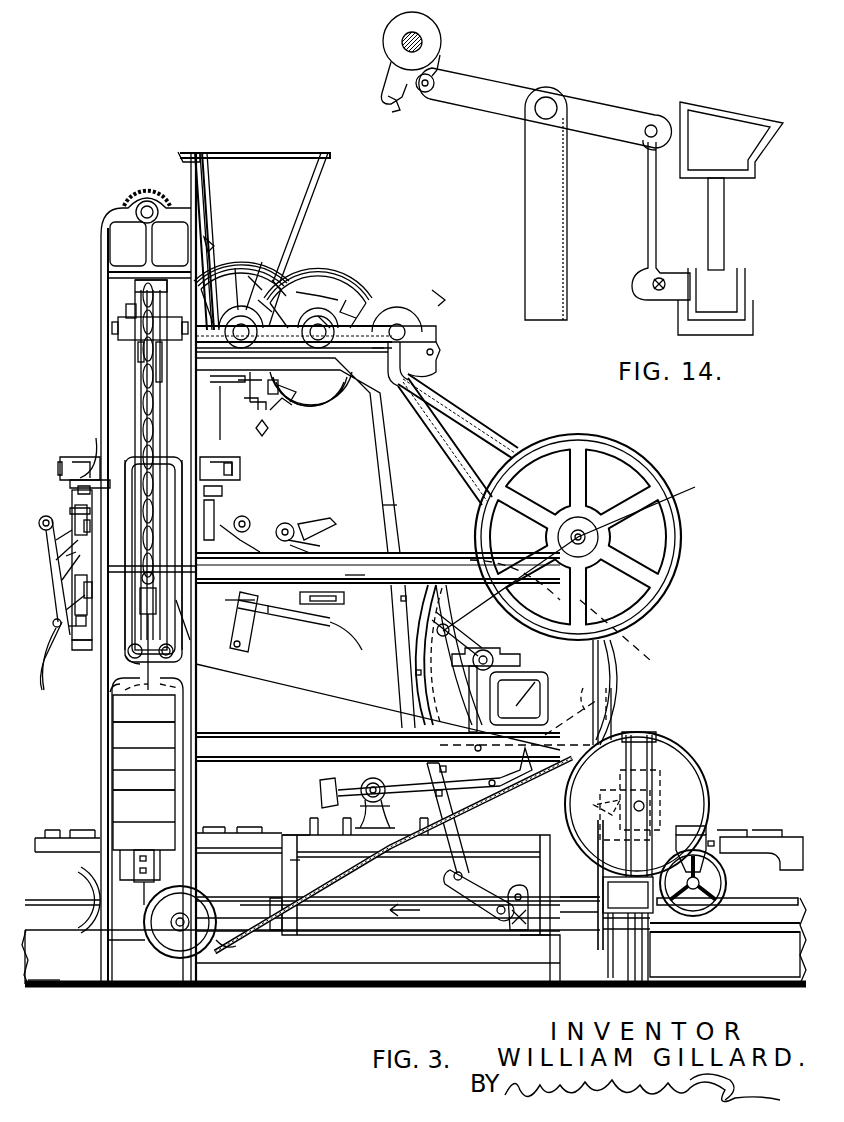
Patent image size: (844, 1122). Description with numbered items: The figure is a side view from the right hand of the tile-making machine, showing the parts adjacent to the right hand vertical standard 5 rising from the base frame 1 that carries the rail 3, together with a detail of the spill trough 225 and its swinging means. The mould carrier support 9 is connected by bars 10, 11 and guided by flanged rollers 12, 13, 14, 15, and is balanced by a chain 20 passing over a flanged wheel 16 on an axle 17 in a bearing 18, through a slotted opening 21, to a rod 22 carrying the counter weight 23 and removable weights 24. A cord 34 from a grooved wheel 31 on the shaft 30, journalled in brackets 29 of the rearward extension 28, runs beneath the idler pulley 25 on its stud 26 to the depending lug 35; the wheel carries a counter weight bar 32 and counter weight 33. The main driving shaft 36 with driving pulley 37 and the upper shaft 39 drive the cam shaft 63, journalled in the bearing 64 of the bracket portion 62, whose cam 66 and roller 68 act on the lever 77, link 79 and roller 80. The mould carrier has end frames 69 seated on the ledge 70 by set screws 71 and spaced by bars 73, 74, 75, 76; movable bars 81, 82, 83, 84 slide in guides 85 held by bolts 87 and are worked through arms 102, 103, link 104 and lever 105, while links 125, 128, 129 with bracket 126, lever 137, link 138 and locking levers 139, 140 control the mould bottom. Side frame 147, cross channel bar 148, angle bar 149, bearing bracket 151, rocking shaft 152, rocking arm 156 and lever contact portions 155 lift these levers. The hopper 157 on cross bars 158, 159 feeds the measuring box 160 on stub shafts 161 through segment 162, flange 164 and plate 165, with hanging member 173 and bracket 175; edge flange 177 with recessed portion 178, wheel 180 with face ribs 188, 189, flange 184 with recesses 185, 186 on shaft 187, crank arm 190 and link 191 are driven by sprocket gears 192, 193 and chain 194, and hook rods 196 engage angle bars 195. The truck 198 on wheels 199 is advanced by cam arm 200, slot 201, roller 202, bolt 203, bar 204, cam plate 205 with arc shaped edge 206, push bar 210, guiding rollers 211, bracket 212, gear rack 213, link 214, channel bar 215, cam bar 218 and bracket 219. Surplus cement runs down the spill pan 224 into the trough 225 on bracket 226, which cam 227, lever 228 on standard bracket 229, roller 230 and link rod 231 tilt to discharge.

In FIG. 3, the base frame 1 is at (54, 985).
In FIG. 3, the rail 3 is at (44, 932).
In FIG. 3, the vertical standard 5 is at (126, 958).
In FIG. 3, the mould carrier support 9 is at (70, 462).
In FIG. 3, the bar 10 is at (66, 465).
In FIG. 3, the bar 11 is at (238, 465).
In FIG. 3, the flanged roller 12 is at (170, 470).
In FIG. 3, the flanged roller 13 is at (134, 470).
In FIG. 3, the flanged roller 14 is at (186, 662).
In FIG. 3, the flanged roller 15 is at (128, 652).
In FIG. 3, the flanged wheel 16 is at (140, 350).
In FIG. 3, the axle 17 is at (218, 322).
In FIG. 3, the bearing 18 is at (128, 318).
In FIG. 3, the chain 20 is at (140, 376).
In FIG. 3, the slotted opening 21 is at (135, 292).
In FIG. 3, the rod 22 is at (112, 692).
In FIG. 3, the counter weight 23 is at (160, 822).
In FIG. 3, the removable weight 24 is at (144, 757).
In FIG. 3, the idler pulley 25 is at (180, 950).
In FIG. 3, the stud 26 is at (172, 932).
In FIG. 3, the rearward extension 28 is at (600, 668).
In FIG. 3, the bracket 29 is at (654, 810).
In FIG. 3, the shaft 30 is at (648, 788).
In FIG. 3, the grooved wheel 31 is at (700, 808).
In FIG. 3, the counter weight bar 32 is at (638, 984).
In FIG. 3, the counter weight 33 is at (628, 895).
In FIG. 3, the cord 34 is at (224, 942).
In FIG. 3, the depending lug 35 is at (144, 803).
In FIG. 3, the main driving shaft 36 is at (600, 530).
In FIG. 3, the driving pulley 37 is at (679, 521).
In FIG. 3, the shaft 39 is at (142, 208).
In FIG. 3, the bracket portion 62 is at (470, 698).
In FIG. 14, the cam shaft 63 is at (405, 44).
In FIG. 3, the cam shaft 63 is at (540, 705).
In FIG. 3, the bearing 64 is at (492, 655).
In FIG. 3, the cam 66 is at (610, 710).
In FIG. 3, the roller 68 is at (605, 695).
In FIG. 3, the end frame 69 is at (80, 500).
In FIG. 3, the ledge 70 is at (100, 440).
In FIG. 3, the set screw 71 is at (84, 490).
In FIG. 3, the bar 73 is at (85, 530).
In FIG. 3, the bar 74 is at (92, 632).
In FIG. 3, the bar 75 is at (240, 612).
In FIG. 3, the bar 76 is at (250, 520).
In FIG. 3, the lever 77 is at (272, 707).
In FIG. 3, the link 79 is at (185, 640).
In FIG. 3, the roller 80 is at (500, 748).
In FIG. 3, the bar 81 is at (60, 545).
In FIG. 3, the bar 82 is at (70, 560).
In FIG. 3, the bar 83 is at (88, 590).
In FIG. 3, the bar 84 is at (74, 630).
In FIG. 3, the guide 85 is at (205, 574).
In FIG. 3, the bolt 87 is at (58, 640).
In FIG. 3, the arm 102 is at (212, 512).
In FIG. 3, the arm 103 is at (250, 646).
In FIG. 3, the link 104 is at (284, 522).
In FIG. 3, the lever 105 is at (355, 580).
In FIG. 3, the link 125 is at (290, 622).
In FIG. 3, the bracket 126 is at (80, 624).
In FIG. 3, the link 128 is at (76, 512).
In FIG. 3, the link 129 is at (222, 492).
In FIG. 3, the lever 137 is at (345, 590).
In FIG. 3, the link 138 is at (328, 520).
In FIG. 3, the locking lever 139 is at (350, 630).
In FIG. 3, the locking lever 140 is at (392, 512).
In FIG. 3, the side frame 147 is at (296, 866).
In FIG. 3, the cross channel bar 148 is at (308, 820).
In FIG. 3, the angle bar 149 is at (422, 830).
In FIG. 3, the bearing bracket 151 is at (375, 800).
In FIG. 3, the rocking shaft 152 is at (370, 786).
In FIG. 3, the lever contact portion 155 is at (335, 790).
In FIG. 3, the rocking arm 156 is at (338, 910).
In FIG. 3, the hopper 157 is at (272, 172).
In FIG. 3, the cross bar 158 is at (195, 155).
In FIG. 3, the cross bar 159 is at (205, 245).
In FIG. 3, the measuring box 160 is at (335, 283).
In FIG. 3, the stub shaft 161 is at (296, 262).
In FIG. 3, the segment 162 is at (274, 280).
In FIG. 3, the outturned flange 164 is at (262, 296).
In FIG. 3, the plate 165 is at (252, 274).
In FIG. 3, the hanging member 173 is at (326, 318).
In FIG. 3, the bracket 175 is at (300, 290).
In FIG. 3, the edge flange 177 is at (236, 288).
In FIG. 3, the recessed portion 178 is at (352, 303).
In FIG. 3, the wheel 180 is at (382, 312).
In FIG. 3, the flange 184 is at (410, 316).
In FIG. 3, the segmental recess 185 is at (420, 326).
In FIG. 3, the segmental recess 186 is at (378, 342).
In FIG. 3, the shaft 187 is at (440, 344).
In FIG. 3, the face rib 188 is at (440, 292).
In FIG. 3, the face rib 189 is at (322, 386).
In FIG. 3, the crank arm 190 is at (436, 356).
In FIG. 3, the link 191 is at (318, 344).
In FIG. 3, the sprocket gear 192 is at (280, 390).
In FIG. 3, the sprocket gear 193 is at (236, 383).
In FIG. 3, the sprocket chain 194 is at (225, 422).
In FIG. 3, the angle bar 195 is at (258, 410).
In FIG. 3, the hook rod 196 is at (296, 405).
In FIG. 3, the truck 198 is at (752, 830).
In FIG. 3, the wheel 199 is at (78, 876).
In FIG. 3, the cam arm 200 is at (450, 620).
In FIG. 3, the slot 201 is at (500, 595).
In FIG. 3, the roller 202 is at (560, 610).
In FIG. 3, the bolt 203 is at (398, 665).
In FIG. 3, the bar 204 is at (402, 542).
In FIG. 3, the cam plate 205 is at (398, 647).
In FIG. 3, the arc shaped edge 206 is at (445, 582).
In FIG. 3, the push bar 210 is at (372, 936).
In FIG. 3, the guiding roller 211 is at (496, 935).
In FIG. 3, the bracket 212 is at (532, 975).
In FIG. 3, the gear rack 213 is at (228, 922).
In FIG. 3, the link 214 is at (478, 895).
In FIG. 3, the channel bar 215 is at (752, 905).
In FIG. 3, the cam bar 218 is at (540, 730).
In FIG. 3, the bracket 219 is at (492, 790).
In FIG. 3, the spill pan 224 is at (300, 543).
In FIG. 14, the trough 225 is at (752, 140).
In FIG. 14, the bracket 226 is at (724, 238).
In FIG. 14, the cam 227 is at (392, 98).
In FIG. 14, the lever 228 is at (487, 107).
In FIG. 14, the standard bracket 229 is at (545, 244).
In FIG. 14, the roller 230 is at (445, 74).
In FIG. 14, the link rod 231 is at (648, 190).